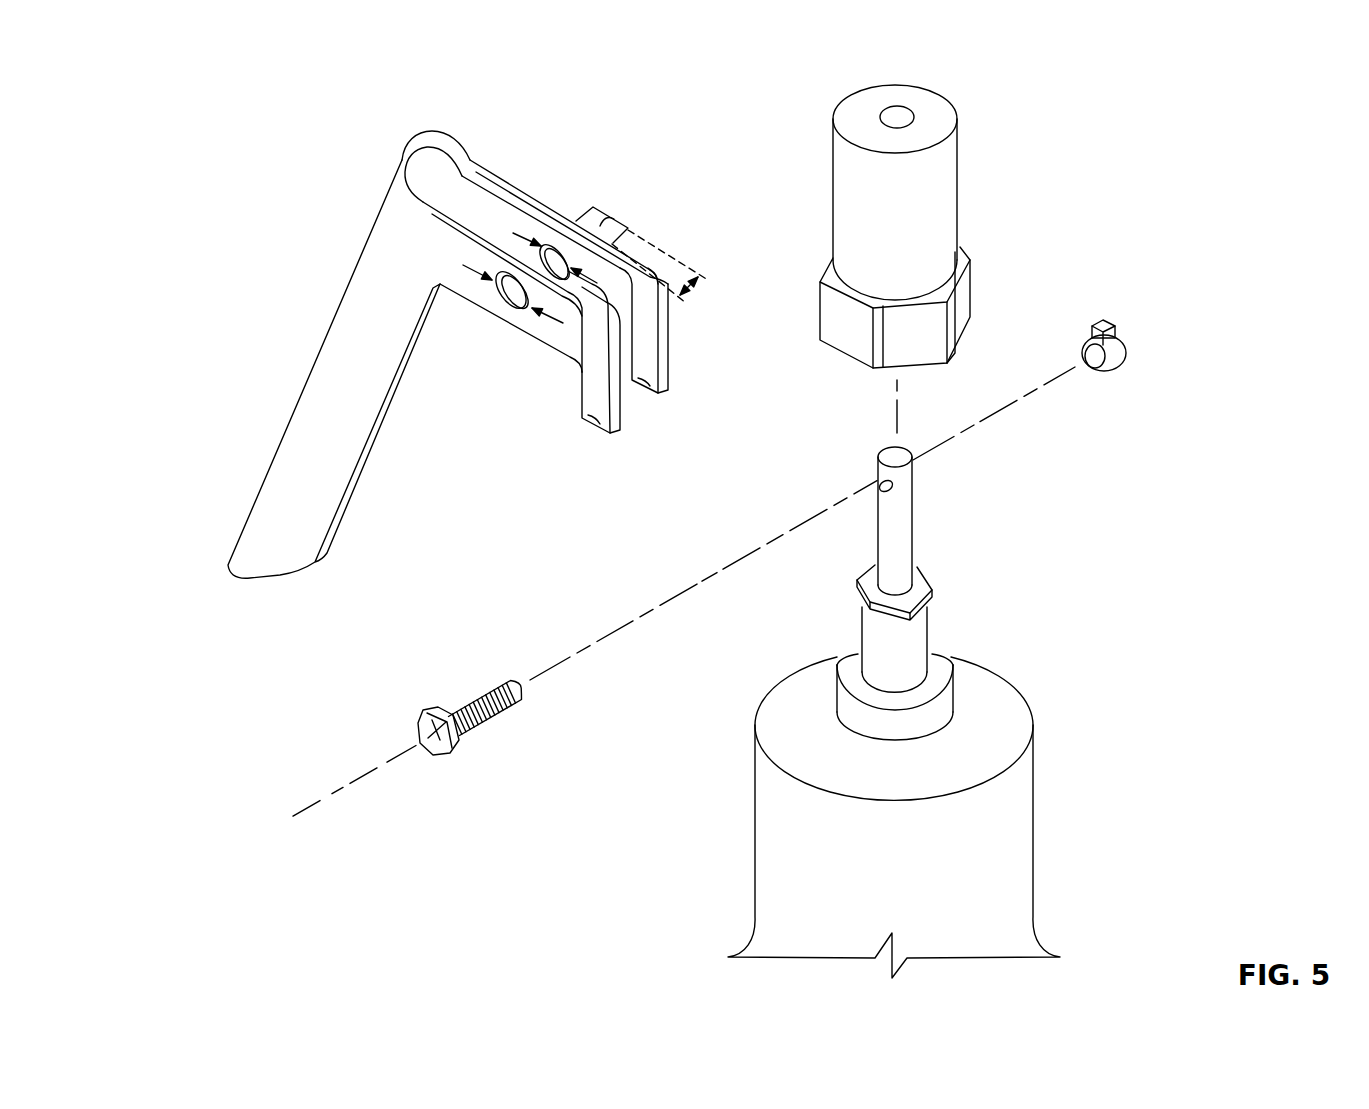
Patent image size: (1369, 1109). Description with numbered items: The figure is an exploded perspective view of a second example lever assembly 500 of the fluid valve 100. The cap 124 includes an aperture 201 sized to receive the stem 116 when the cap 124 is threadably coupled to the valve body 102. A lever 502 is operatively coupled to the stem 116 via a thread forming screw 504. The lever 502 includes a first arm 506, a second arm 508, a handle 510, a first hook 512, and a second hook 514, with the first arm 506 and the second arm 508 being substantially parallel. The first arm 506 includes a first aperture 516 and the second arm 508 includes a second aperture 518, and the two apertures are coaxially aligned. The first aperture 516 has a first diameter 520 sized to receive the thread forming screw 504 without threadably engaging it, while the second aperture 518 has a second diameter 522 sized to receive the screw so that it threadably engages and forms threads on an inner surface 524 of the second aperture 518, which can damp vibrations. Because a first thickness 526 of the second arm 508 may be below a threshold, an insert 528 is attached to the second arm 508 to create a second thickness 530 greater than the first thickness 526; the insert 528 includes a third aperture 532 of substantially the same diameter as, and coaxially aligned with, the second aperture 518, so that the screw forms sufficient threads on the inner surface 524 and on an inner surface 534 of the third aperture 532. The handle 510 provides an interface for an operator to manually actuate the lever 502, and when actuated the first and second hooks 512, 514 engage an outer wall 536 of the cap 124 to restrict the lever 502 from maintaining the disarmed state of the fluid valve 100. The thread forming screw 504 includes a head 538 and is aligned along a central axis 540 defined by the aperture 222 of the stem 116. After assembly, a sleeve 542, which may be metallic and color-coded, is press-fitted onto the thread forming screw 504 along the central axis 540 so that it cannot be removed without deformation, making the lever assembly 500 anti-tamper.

The fluid valve 100 is at (1145, 708).
The valve body 102 is at (1035, 835).
The stem 116 is at (913, 496).
The cap 124 is at (913, 192).
The aperture 201 is at (897, 117).
The aperture 222 is at (883, 487).
The lever assembly 500 is at (160, 115).
The lever 502 is at (325, 255).
The thread forming screw 504 is at (480, 727).
The first arm 506 is at (467, 284).
The second arm 508 is at (500, 227).
The handle 510 is at (278, 440).
The first hook 512 is at (612, 434).
The second hook 514 is at (666, 392).
The first aperture 516 is at (518, 297).
The second aperture 518 is at (562, 257).
The first diameter 520 is at (463, 265).
The second diameter 522 is at (653, 293).
The inner surface 524 is at (590, 413).
The first thickness 526 is at (447, 195).
The insert 528 is at (580, 208).
The second thickness 530 is at (700, 283).
The third aperture 532 is at (627, 211).
The inner surface 534 is at (603, 220).
The outer wall 536 is at (958, 216).
The head 538 is at (437, 708).
The central axis 540 is at (343, 785).
The sleeve 542 is at (1115, 365).